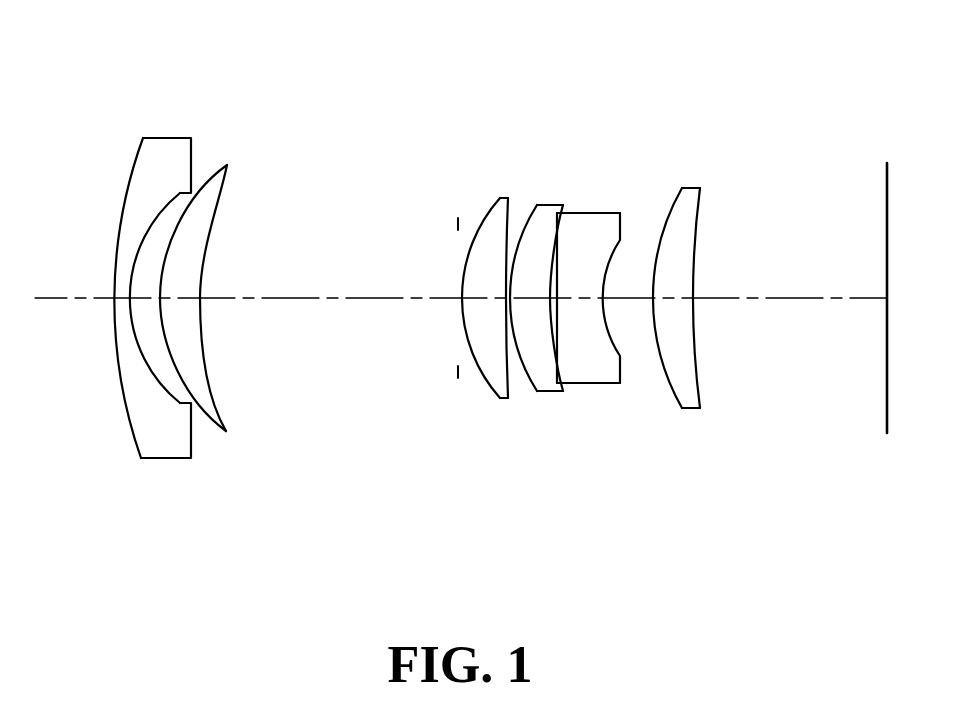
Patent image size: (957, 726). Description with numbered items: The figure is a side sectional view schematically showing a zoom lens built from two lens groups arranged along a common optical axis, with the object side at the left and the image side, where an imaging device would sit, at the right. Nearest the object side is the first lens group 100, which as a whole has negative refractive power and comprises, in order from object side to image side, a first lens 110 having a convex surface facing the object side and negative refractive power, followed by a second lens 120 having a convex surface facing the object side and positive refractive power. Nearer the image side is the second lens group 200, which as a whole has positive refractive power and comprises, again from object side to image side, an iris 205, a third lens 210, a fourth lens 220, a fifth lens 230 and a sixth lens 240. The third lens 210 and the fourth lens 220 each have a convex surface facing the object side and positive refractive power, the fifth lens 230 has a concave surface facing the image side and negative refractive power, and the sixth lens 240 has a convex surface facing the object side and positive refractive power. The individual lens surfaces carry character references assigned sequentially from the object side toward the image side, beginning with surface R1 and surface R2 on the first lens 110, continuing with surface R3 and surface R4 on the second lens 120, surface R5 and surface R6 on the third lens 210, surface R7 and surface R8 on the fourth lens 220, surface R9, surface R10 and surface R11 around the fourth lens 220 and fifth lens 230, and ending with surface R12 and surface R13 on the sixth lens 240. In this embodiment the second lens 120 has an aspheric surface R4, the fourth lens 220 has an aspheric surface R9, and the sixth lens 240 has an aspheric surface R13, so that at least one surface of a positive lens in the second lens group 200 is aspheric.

The first lens group 100 is at (135, 58).
The first lens 110 is at (163, 150).
The second lens 120 is at (213, 180).
The second lens group 200 is at (695, 105).
The iris 205 is at (455, 222).
The third lens 210 is at (490, 222).
The fourth lens 220 is at (547, 213).
The fifth lens 230 is at (602, 222).
The sixth lens 240 is at (690, 195).
The lens surface R1 is at (135, 434).
The lens surface R2 is at (194, 434).
The lens surface R3 is at (213, 433).
The aspheric surface R4 is at (226, 431).
The lens surface R5 is at (456, 376).
The lens surface R6 is at (485, 382).
The lens surface R7 is at (530, 388).
The lens surface R8 is at (542, 390).
The aspheric surface R9 is at (555, 370).
The lens surface R10 is at (558, 327).
The lens surface R11 is at (620, 372).
The lens surface R12 is at (674, 393).
The aspheric surface R13 is at (699, 393).